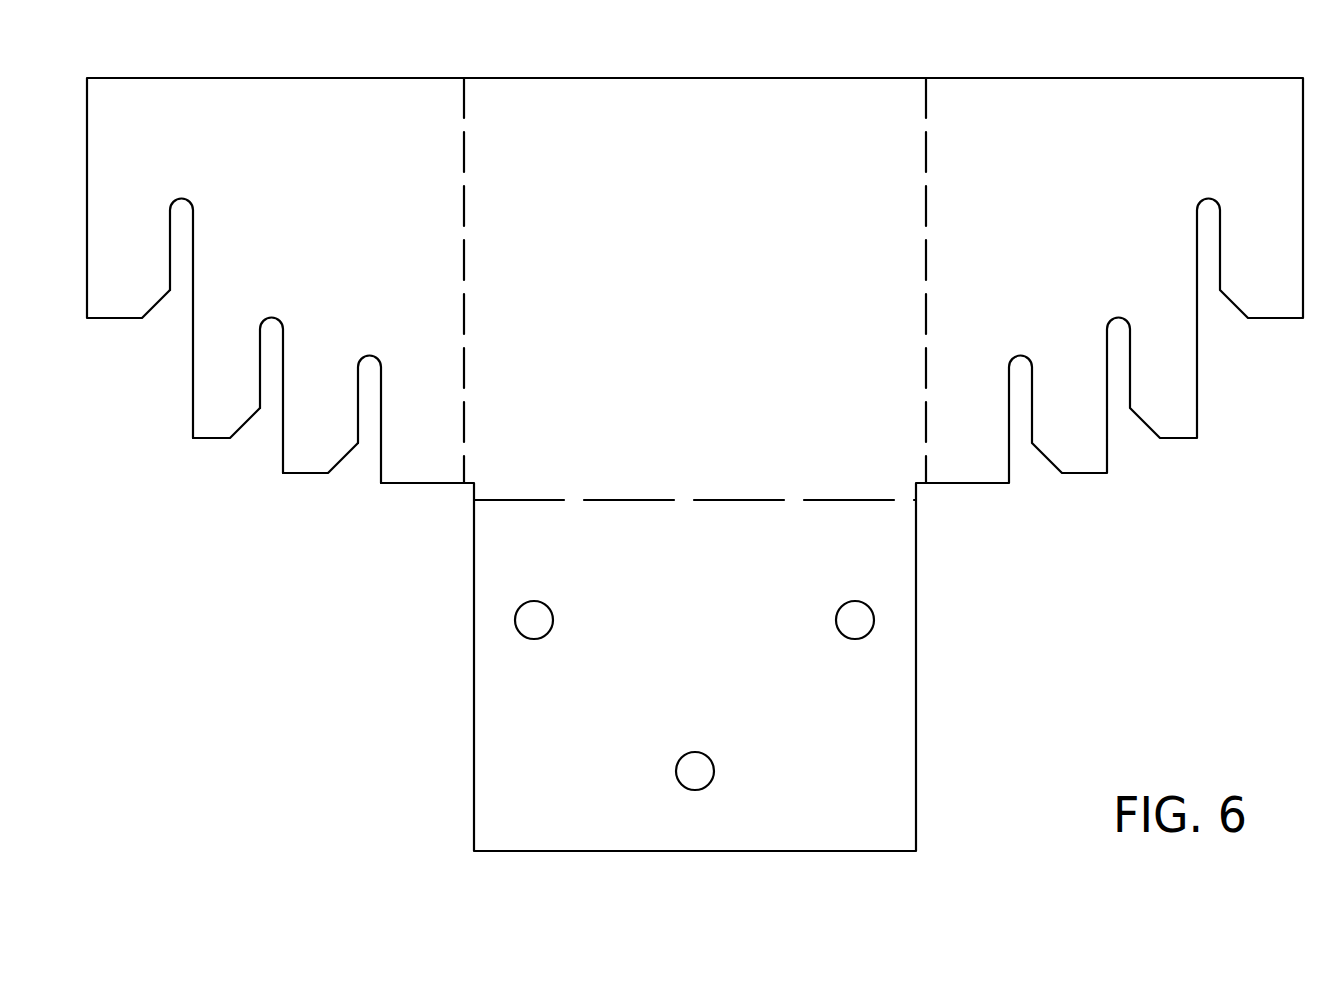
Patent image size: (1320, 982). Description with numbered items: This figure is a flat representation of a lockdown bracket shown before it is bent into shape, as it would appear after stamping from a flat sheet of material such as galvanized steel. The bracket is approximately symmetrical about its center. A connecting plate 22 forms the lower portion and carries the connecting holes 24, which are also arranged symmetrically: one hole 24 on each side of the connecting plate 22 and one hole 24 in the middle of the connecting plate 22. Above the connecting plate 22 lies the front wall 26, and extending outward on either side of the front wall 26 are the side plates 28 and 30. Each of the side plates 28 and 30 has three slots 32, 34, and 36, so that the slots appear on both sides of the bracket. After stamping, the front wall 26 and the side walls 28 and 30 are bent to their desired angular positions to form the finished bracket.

The connecting plate 22 is at (862, 829).
The connecting hole 24 is at (696, 774).
The front wall 26 is at (700, 98).
The side plate 28 is at (403, 103).
The side plate 30 is at (1076, 103).
The slot 32 is at (182, 280).
The slot 34 is at (273, 401).
The slot 36 is at (369, 439).